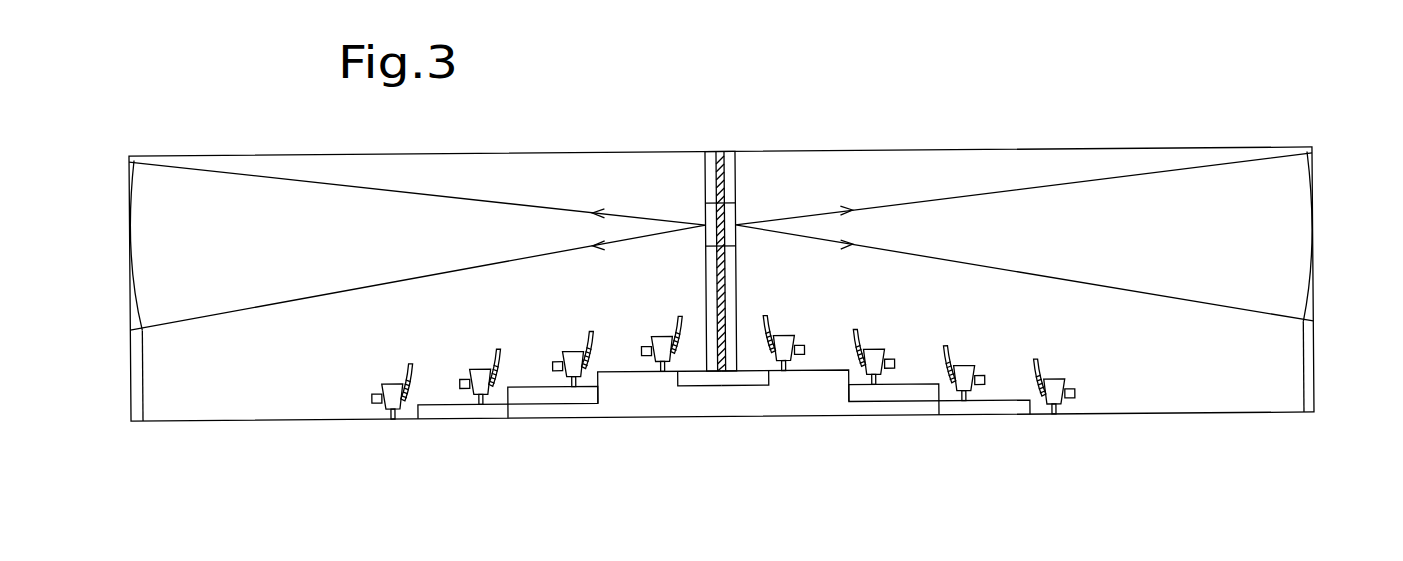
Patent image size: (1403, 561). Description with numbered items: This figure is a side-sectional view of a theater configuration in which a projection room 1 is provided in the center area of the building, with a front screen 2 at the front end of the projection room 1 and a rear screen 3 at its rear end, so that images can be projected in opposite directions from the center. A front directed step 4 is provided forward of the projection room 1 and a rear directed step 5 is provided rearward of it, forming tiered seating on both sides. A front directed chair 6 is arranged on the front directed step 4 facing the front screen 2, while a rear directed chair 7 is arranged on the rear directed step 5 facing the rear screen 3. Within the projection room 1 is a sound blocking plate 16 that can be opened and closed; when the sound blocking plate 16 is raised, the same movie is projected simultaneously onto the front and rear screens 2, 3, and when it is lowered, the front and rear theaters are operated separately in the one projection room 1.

The projection room 1 is at (736, 166).
The sound blocking plate 16 is at (718, 184).
The front screen 2 is at (134, 299).
The rear screen 3 is at (1314, 303).
The front directed step 4 is at (812, 379).
The rear directed step 5 is at (458, 410).
The front directed chair 6 is at (784, 334).
The rear directed chair 7 is at (391, 380).